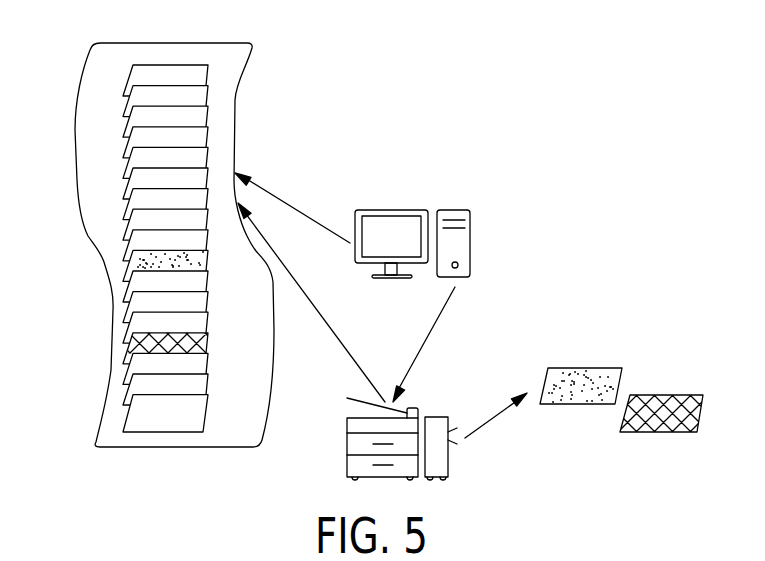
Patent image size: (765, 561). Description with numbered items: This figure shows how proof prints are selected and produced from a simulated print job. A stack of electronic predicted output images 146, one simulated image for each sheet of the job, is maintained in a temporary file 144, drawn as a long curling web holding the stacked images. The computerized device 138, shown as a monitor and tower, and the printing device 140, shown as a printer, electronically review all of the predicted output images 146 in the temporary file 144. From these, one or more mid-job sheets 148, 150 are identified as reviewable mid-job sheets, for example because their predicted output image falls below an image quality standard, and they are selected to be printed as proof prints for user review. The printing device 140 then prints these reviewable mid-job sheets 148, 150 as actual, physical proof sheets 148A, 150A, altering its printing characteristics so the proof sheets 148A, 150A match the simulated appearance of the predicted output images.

The computerized device 138 is at (397, 210).
The printing device 140 is at (347, 440).
The temporary file 144 is at (236, 107).
The predicted output images 146 is at (131, 247).
The reviewable mid-job sheet 148 is at (115, 267).
The reviewable mid-job sheet 150 is at (116, 349).
The proof sheet 148A is at (590, 352).
The proof sheet 150A is at (670, 380).